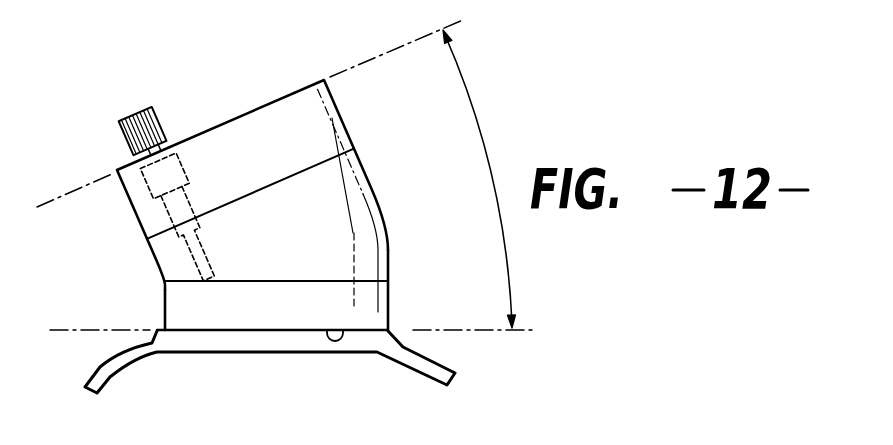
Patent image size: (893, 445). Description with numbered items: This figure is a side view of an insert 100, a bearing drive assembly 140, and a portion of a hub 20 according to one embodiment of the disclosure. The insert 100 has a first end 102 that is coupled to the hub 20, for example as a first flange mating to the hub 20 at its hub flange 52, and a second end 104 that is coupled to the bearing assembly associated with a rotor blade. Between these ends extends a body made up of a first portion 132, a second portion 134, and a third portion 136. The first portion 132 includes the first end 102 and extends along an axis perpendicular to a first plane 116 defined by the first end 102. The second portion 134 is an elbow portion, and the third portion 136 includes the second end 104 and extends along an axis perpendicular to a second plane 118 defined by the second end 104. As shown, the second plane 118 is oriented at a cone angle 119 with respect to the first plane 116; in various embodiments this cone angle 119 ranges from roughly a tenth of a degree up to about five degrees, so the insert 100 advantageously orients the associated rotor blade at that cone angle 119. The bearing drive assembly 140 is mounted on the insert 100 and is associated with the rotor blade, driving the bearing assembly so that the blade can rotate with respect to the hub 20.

The insert 100 is at (500, 73).
The second end 104 is at (275, 100).
The bearing drive assembly 140 is at (112, 142).
The third portion 136 is at (330, 138).
The second portion 134 is at (367, 219).
The first portion 132 is at (368, 293).
The first end 102 is at (345, 330).
The hub flange 52 is at (188, 328).
The hub 20 is at (90, 356).
The second plane 118 is at (373, 55).
The first plane 116 is at (470, 332).
The cone angle 119 is at (490, 164).